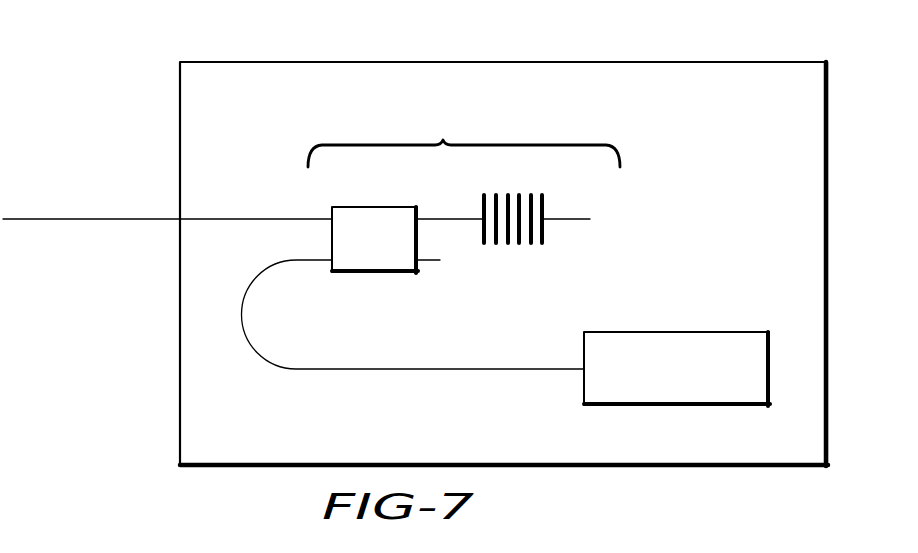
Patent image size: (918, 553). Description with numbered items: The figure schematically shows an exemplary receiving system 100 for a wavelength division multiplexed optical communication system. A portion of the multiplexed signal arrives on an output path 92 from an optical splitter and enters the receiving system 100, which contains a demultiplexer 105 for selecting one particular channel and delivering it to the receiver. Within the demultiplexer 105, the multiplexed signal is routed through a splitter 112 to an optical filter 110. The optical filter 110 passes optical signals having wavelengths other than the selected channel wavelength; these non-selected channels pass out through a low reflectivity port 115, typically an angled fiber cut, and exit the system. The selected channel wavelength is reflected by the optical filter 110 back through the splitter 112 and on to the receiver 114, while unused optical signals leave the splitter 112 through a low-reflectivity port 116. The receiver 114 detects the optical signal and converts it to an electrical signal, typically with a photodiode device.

The receiving system 100 is at (748, 62).
The output path 92 is at (63, 219).
The demultiplexer 105 is at (443, 140).
The splitter 112 is at (393, 207).
The optical filter 110 is at (544, 210).
The low reflectivity port 115 is at (585, 217).
The low-reflectivity port 116 is at (440, 260).
The receiver 114 is at (707, 332).